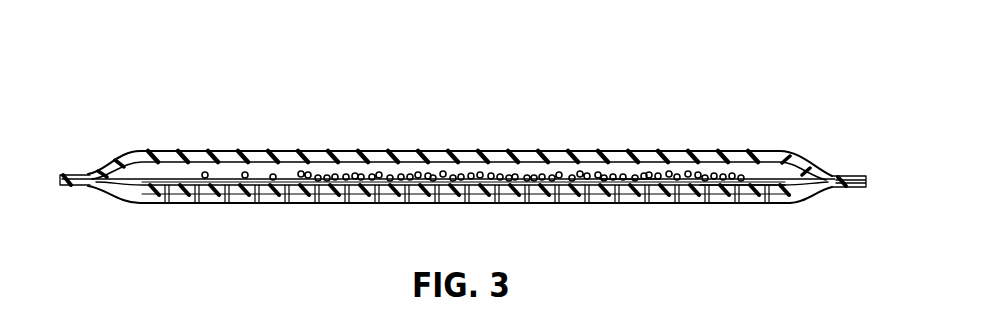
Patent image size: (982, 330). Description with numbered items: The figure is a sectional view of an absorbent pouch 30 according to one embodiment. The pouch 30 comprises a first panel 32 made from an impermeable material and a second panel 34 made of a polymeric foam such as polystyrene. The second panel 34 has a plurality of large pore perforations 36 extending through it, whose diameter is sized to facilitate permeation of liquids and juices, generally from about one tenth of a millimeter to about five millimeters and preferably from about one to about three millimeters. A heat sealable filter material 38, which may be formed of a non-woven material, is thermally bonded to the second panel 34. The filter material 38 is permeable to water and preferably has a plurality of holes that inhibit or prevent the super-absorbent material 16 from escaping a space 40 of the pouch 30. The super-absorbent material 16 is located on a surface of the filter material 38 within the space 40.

The pouch 30 is at (236, 122).
The first panel 32 is at (337, 150).
The space 40 is at (552, 150).
The second panel 34 is at (371, 203).
The large pore perforations 36 is at (593, 203).
The super-absorbent material 16 is at (630, 190).
The filter material 38 is at (750, 203).